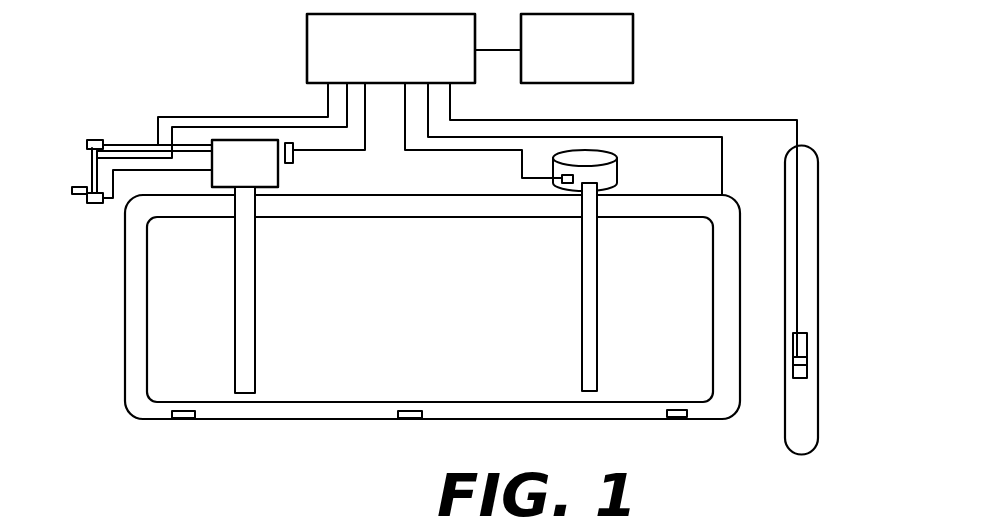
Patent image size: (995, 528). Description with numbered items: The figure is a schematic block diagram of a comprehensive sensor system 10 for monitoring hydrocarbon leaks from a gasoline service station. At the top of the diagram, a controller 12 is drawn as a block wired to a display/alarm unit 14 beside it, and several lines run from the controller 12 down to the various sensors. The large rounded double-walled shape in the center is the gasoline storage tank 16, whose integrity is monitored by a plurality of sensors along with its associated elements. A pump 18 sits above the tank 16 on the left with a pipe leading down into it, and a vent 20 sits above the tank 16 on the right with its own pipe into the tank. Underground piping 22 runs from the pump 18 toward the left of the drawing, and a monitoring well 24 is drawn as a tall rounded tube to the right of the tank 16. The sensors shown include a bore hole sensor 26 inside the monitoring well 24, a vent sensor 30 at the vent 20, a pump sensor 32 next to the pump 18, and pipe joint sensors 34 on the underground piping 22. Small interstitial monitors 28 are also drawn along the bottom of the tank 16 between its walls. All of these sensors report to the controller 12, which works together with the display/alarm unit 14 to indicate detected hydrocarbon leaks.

The comprehensive sensor system 10 is at (712, 32).
The controller 12 is at (307, 37).
The display/alarm unit 14 is at (633, 38).
The gasoline storage tank 16 is at (433, 304).
The pump 18 is at (212, 170).
The vent 20 is at (612, 175).
The underground piping 22 is at (80, 199).
The monitoring well 24 is at (807, 147).
The bore hole sensor 26 is at (793, 360).
The interstitial monitors 28 is at (187, 418).
The vent sensor 30 is at (567, 176).
The pump sensor 32 is at (293, 158).
The pipe joint sensor 34 is at (80, 190).